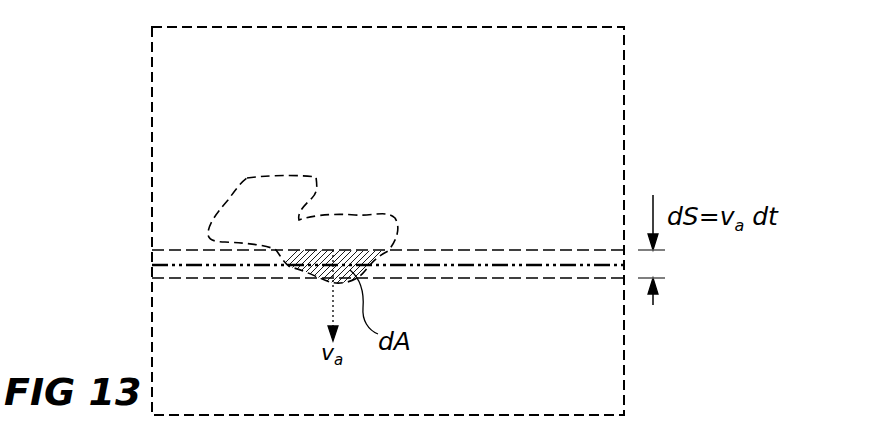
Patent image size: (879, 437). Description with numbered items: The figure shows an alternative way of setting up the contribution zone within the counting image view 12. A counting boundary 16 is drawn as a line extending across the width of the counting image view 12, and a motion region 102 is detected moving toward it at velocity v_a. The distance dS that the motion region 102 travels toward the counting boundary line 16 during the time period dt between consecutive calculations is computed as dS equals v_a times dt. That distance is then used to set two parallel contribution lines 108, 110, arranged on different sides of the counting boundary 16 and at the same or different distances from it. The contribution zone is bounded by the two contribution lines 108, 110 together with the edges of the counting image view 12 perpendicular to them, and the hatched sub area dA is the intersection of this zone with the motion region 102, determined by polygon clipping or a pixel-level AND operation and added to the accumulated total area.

The counting image view 12 is at (162, 82).
The motion region 102 is at (263, 195).
The contribution line 108 is at (495, 250).
The contribution line 110 is at (167, 278).
The counting boundary line 16 is at (537, 265).